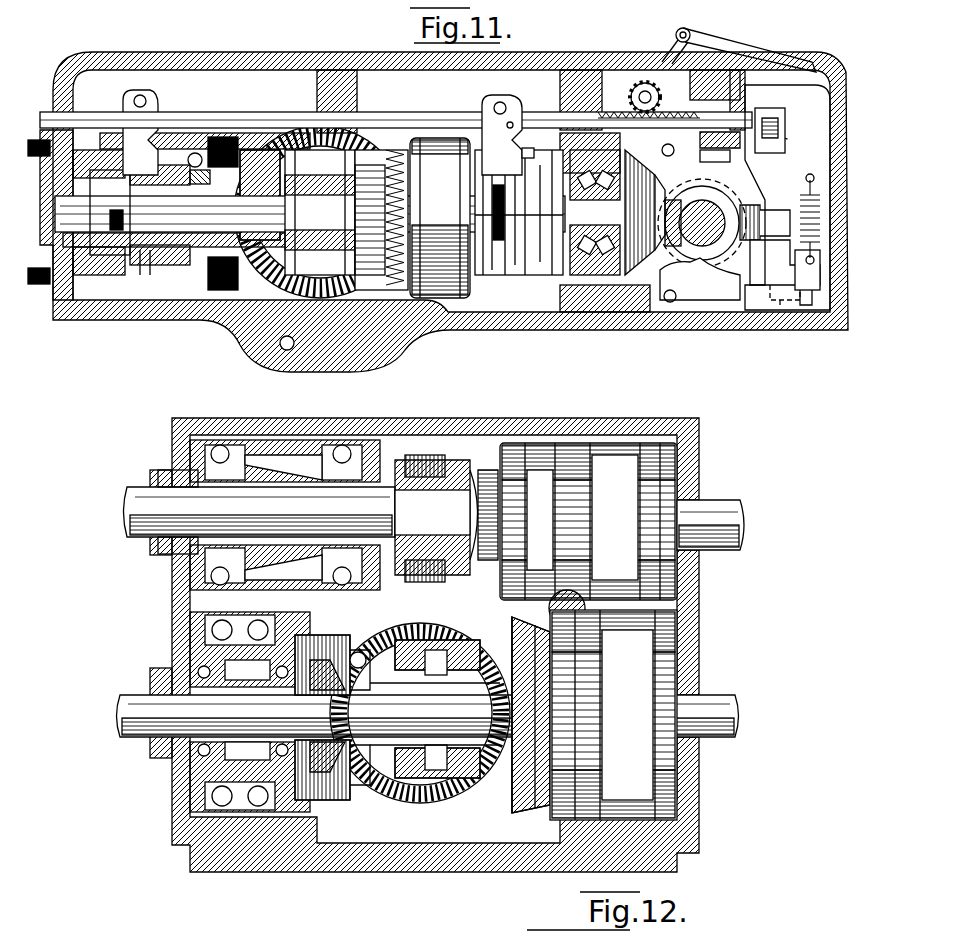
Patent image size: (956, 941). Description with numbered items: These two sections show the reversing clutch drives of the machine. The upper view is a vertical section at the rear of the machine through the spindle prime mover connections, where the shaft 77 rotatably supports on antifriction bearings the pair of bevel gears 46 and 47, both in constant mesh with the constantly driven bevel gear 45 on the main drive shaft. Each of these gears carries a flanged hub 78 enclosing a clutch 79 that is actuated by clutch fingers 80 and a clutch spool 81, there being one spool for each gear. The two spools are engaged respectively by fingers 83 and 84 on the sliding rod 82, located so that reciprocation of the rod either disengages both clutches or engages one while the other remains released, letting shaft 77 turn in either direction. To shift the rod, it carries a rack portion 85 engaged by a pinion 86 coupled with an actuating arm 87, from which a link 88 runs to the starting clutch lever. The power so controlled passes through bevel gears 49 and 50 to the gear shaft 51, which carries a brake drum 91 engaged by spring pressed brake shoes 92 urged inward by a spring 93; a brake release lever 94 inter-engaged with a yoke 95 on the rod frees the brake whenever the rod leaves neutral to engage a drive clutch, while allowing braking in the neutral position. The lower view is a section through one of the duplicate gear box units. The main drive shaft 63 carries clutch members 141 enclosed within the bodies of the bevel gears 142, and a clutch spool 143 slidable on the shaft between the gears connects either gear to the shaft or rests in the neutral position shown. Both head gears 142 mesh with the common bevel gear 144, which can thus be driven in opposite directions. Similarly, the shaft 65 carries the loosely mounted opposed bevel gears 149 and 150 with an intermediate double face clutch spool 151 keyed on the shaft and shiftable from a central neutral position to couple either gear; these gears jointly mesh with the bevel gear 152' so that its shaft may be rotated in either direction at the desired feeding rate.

In FIG. 11, the constantly driven bevel gear 45 is at (300, 128).
In FIG. 11, the bevel gear 46 is at (385, 150).
In FIG. 11, the bevel gear 47 is at (270, 150).
In FIG. 11, the bevel gear 49 is at (598, 290).
In FIG. 11, the bevel gear 50 is at (645, 298).
In FIG. 11, the gear shaft 51 is at (712, 248).
In FIG. 12, the main drive shaft 63 is at (735, 712).
In FIG. 12, the shaft 65 is at (728, 510).
In FIG. 11, the shaft 77 is at (100, 250).
In FIG. 11, the flanged hub 78 is at (235, 140).
In FIG. 11, the clutch 79 is at (208, 148).
In FIG. 11, the clutch fingers 80 is at (188, 162).
In FIG. 11, the clutch spools 81 is at (140, 255).
In FIG. 11, the sliding rod 82 is at (548, 118).
In FIG. 11, the finger 83 is at (522, 100).
In FIG. 11, the finger 84 is at (125, 98).
In FIG. 11, the rack portion 85 is at (607, 110).
In FIG. 11, the pinion 86 is at (640, 82).
In FIG. 11, the actuating arm 87 is at (678, 38).
In FIG. 11, the link 88 is at (736, 50).
In FIG. 11, the brake drum 91 is at (770, 330).
In FIG. 11, the brake shoes 92 is at (785, 172).
In FIG. 11, the spring 93 is at (807, 177).
In FIG. 11, the brake release lever 94 is at (770, 115).
In FIG. 11, the yoke 95 is at (808, 80).
In FIG. 12, the clutch members 141 is at (365, 790).
In FIG. 12, the bevel gears 142 is at (320, 780).
In FIG. 12, the clutch spool 143 is at (412, 800).
In FIG. 12, the common bevel gear 144 is at (460, 805).
In FIG. 12, the bevel gear 149 is at (368, 450).
In FIG. 12, the bevel gear 150 is at (490, 450).
In FIG. 12, the double face clutch spool 151 is at (433, 460).
In FIG. 12, the bevel gear 152' is at (479, 542).